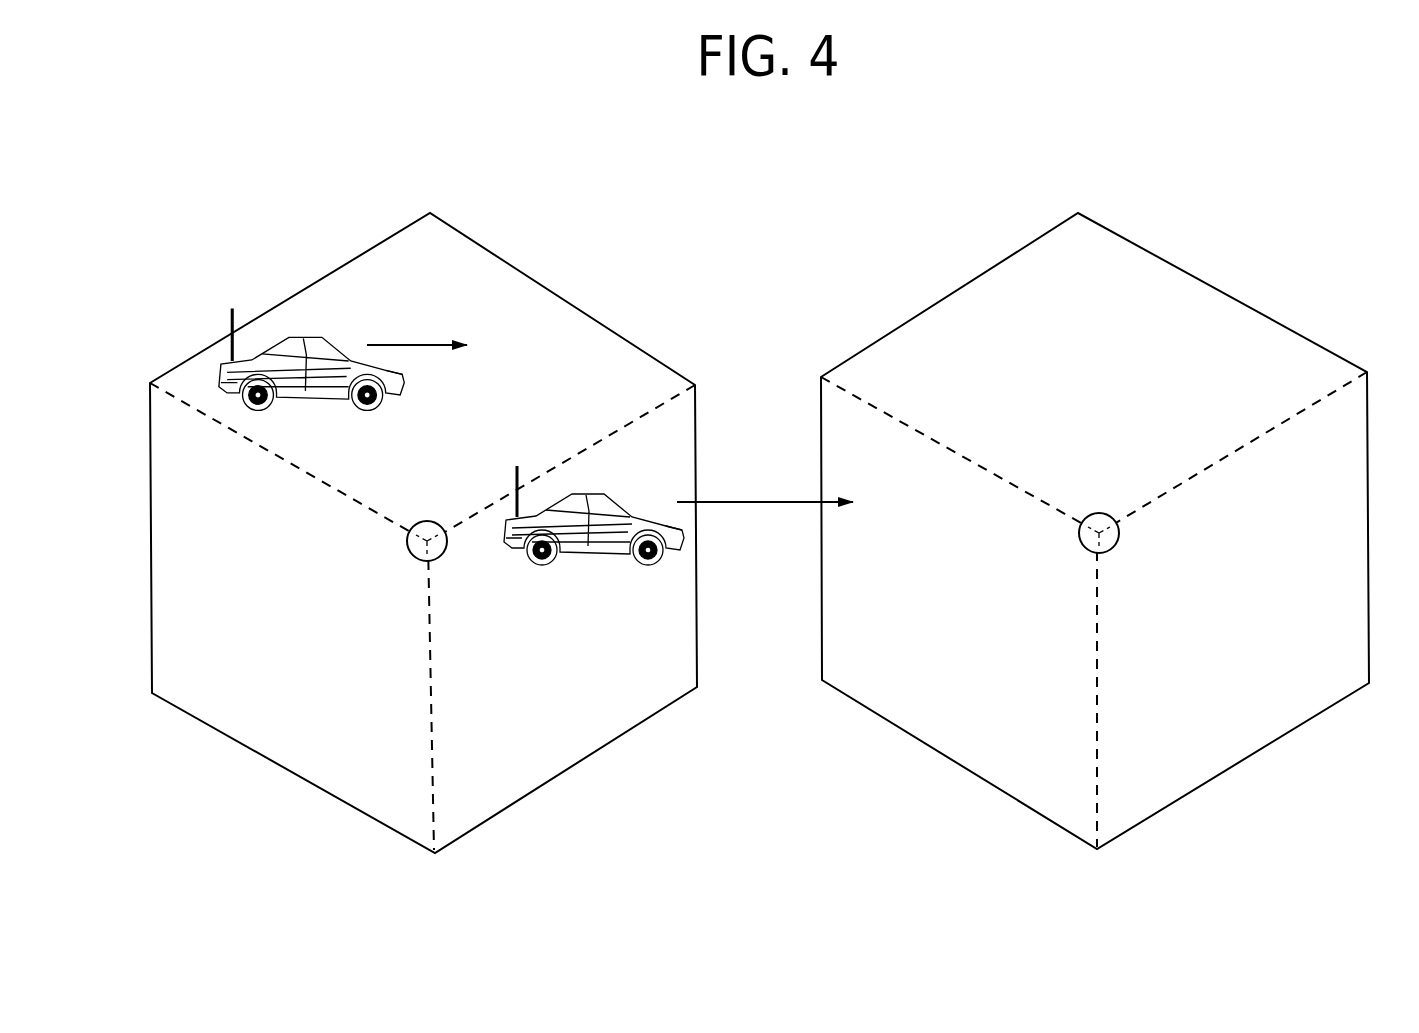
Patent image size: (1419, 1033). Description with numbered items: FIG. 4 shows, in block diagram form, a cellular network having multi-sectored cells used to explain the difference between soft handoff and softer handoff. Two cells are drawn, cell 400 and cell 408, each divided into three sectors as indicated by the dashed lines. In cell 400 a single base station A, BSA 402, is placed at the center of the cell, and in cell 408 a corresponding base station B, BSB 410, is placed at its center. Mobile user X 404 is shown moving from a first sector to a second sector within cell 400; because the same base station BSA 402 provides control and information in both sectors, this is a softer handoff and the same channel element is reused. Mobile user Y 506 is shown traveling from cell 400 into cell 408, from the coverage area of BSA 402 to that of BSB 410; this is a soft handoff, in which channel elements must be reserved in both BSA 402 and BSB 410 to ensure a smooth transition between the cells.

The cell 400 is at (502, 260).
The base station A (BSA) 402 is at (412, 558).
The mobile user X 404 is at (290, 347).
The mobile user Y 506 is at (660, 562).
The cell 408 is at (1175, 265).
The base station B (BSB) 410 is at (1105, 513).